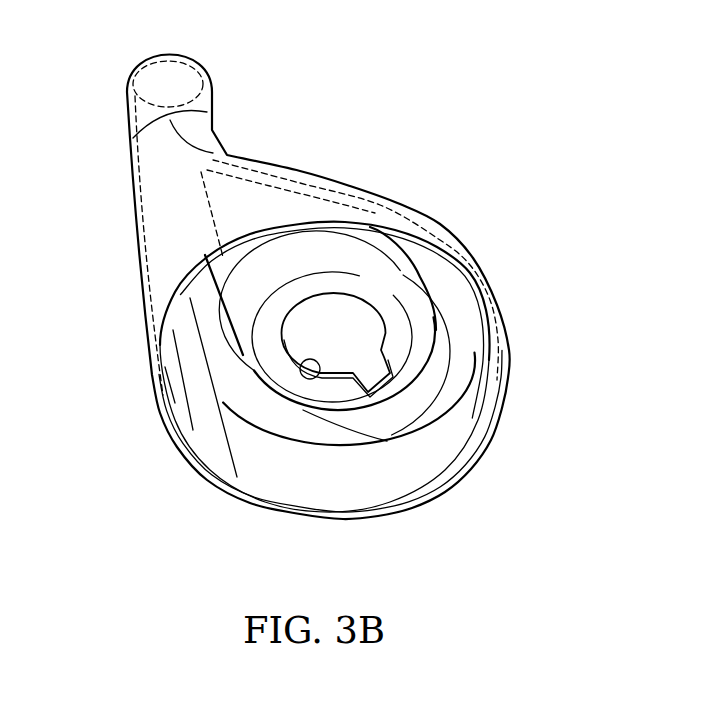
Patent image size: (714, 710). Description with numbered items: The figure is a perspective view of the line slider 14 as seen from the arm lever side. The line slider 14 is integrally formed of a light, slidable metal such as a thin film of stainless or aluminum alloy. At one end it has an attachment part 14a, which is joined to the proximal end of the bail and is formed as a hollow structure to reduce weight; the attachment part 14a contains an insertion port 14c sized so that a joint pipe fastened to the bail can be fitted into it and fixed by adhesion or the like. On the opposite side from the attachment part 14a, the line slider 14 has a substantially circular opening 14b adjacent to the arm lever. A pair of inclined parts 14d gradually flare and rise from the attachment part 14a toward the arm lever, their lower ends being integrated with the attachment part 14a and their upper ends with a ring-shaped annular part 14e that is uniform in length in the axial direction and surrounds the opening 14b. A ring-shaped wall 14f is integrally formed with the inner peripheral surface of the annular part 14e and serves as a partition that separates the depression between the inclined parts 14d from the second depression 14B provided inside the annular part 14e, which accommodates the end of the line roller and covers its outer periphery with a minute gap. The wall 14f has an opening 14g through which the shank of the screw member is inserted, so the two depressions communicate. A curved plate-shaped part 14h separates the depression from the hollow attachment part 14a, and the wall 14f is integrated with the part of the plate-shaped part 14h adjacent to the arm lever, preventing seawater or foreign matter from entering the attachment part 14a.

The line slider 14 is at (446, 180).
The attachment part 14a is at (212, 98).
The opening 14b is at (503, 358).
The insertion port 14c is at (173, 60).
The inclined parts 14d is at (301, 168).
The annular part 14e is at (468, 253).
The wall 14f is at (334, 280).
The opening 14g is at (321, 374).
The plate-shaped part 14h is at (250, 266).
The second depression 14B is at (447, 383).